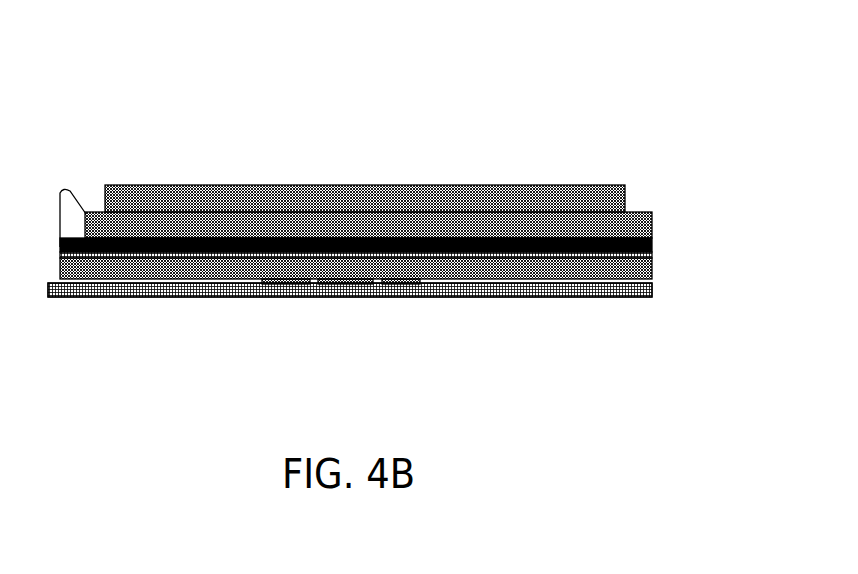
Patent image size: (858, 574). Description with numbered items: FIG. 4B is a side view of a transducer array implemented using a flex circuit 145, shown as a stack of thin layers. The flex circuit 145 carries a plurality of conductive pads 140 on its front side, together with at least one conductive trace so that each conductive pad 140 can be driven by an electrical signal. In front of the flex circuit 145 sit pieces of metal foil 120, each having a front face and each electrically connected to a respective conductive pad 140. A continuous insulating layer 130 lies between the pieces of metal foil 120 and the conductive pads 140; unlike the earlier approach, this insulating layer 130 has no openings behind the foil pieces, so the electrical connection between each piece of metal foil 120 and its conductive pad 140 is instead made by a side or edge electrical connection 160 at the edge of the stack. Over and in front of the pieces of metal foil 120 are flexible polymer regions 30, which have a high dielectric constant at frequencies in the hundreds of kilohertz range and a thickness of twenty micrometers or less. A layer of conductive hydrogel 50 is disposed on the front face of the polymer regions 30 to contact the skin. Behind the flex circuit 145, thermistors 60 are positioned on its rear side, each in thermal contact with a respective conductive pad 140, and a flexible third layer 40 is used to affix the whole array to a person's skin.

The flexible polymer region 30 is at (630, 211).
The flexible third layer 40 is at (575, 293).
The layer of conductive hydrogel 50 is at (512, 188).
The thermistor 60 is at (407, 285).
The piece of metal foil 120 is at (653, 223).
The insulating layer 130 is at (653, 245).
The conductive pad 140 is at (653, 252).
The flex circuit 145 is at (650, 273).
The side or edge electrical connection 160 is at (70, 191).